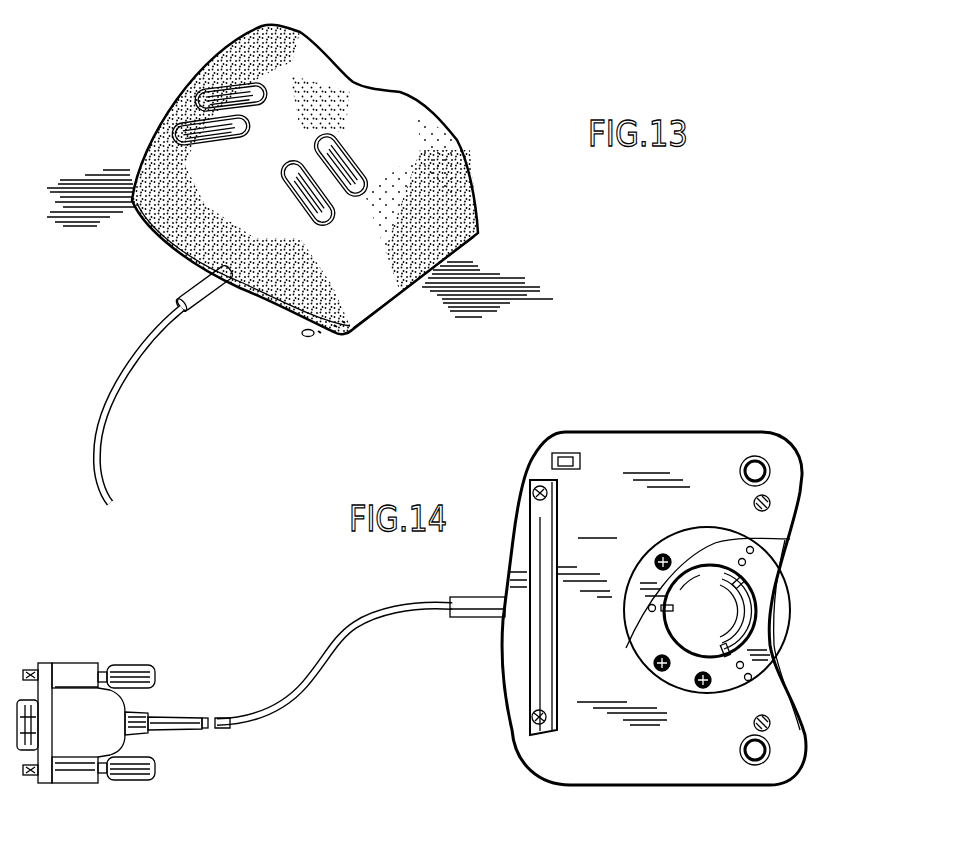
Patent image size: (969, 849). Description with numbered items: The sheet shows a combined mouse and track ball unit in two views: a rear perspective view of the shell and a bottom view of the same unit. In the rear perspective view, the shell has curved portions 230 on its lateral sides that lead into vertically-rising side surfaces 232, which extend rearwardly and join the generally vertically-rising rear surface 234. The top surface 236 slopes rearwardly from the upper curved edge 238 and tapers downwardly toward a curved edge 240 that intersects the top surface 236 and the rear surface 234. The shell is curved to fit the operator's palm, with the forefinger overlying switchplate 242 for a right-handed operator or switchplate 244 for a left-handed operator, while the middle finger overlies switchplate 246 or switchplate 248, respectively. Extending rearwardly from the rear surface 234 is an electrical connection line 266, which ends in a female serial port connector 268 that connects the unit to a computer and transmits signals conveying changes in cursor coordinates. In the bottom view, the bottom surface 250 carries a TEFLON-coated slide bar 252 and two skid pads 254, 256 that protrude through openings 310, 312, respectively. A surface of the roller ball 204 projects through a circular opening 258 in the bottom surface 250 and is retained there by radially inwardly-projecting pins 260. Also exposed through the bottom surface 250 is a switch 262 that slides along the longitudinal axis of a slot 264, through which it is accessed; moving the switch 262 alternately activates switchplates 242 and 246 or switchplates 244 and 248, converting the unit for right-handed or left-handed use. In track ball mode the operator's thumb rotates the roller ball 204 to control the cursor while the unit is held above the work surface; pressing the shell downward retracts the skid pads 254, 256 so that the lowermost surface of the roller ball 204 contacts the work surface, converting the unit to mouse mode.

In FIG. 14, the roller ball 204 is at (732, 622).
In FIG. 14, the curved portions 230 is at (801, 490).
In FIG. 13, the vertically-rising side surfaces 232 is at (480, 238).
In FIG. 14, the vertically-rising side surfaces 232 is at (672, 432).
In FIG. 13, the rear surface 234 is at (182, 220).
In FIG. 13, the top surface 236 is at (327, 102).
In FIG. 13, the upper curved edge 238 is at (383, 84).
In FIG. 13, the curved edge 240 is at (277, 245).
In FIG. 13, the switchplate 242 is at (365, 178).
In FIG. 13, the switchplate 244 is at (200, 93).
In FIG. 13, the switchplate 246 is at (333, 225).
In FIG. 13, the switchplate 248 is at (185, 126).
In FIG. 14, the bottom surface 250 is at (600, 599).
In FIG. 14, the slide bar 252 is at (530, 650).
In FIG. 14, the skid pad 254 is at (765, 459).
In FIG. 14, the skid pad 256 is at (751, 770).
In FIG. 14, the circular opening 258 is at (785, 540).
In FIG. 14, the pins 260 is at (742, 588).
In FIG. 14, the switch 262 is at (566, 455).
In FIG. 14, the slot 264 is at (582, 462).
In FIG. 14, the electrical connection line 266 is at (318, 680).
In FIG. 14, the female serial port connector 268 is at (82, 695).
In FIG. 14, the opening 310 is at (750, 456).
In FIG. 14, the opening 312 is at (768, 757).